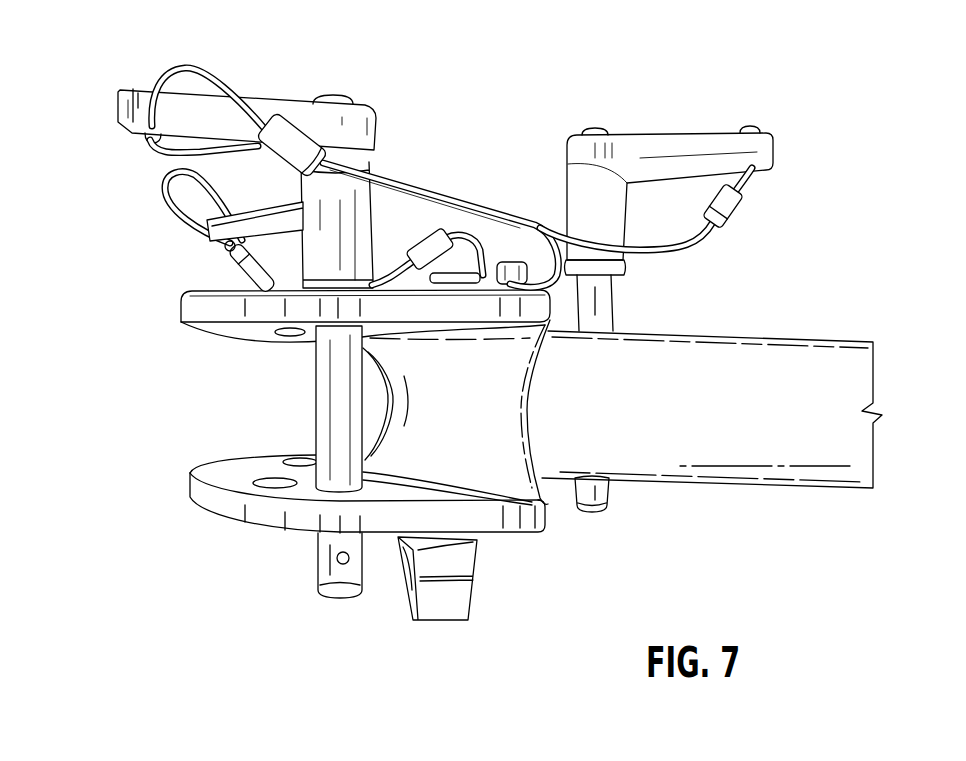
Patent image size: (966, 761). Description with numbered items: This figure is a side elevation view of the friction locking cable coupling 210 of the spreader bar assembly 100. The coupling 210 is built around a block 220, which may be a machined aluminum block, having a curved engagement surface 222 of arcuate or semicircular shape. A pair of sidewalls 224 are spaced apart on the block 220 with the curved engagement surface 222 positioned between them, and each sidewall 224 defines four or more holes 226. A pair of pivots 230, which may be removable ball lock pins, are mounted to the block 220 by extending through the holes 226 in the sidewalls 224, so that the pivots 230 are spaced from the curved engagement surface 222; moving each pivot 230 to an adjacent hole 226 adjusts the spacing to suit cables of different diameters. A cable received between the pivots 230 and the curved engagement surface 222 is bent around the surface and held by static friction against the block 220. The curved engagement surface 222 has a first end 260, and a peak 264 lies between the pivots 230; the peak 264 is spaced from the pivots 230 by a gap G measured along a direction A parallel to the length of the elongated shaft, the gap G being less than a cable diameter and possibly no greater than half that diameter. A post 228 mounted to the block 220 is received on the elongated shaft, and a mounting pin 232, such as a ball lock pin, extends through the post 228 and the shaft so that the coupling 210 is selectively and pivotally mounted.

The spreader bar assembly 100 is at (82, 68).
The friction locking cable coupling 210 is at (535, 535).
The block 220 is at (483, 300).
The curved engagement surface 222 is at (487, 466).
The sidewalls 224 is at (187, 310).
The holes 226 is at (270, 457).
The post 228 is at (813, 350).
The pivots 230 is at (272, 100).
The mounting pin 232 is at (595, 152).
The first end 260 is at (545, 411).
The peak 264 is at (388, 428).
The gap G is at (288, 403).
The direction A is at (593, 47).